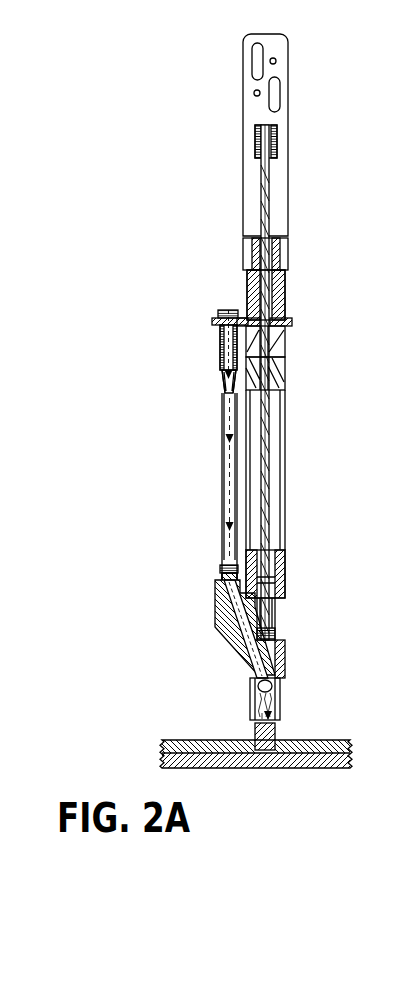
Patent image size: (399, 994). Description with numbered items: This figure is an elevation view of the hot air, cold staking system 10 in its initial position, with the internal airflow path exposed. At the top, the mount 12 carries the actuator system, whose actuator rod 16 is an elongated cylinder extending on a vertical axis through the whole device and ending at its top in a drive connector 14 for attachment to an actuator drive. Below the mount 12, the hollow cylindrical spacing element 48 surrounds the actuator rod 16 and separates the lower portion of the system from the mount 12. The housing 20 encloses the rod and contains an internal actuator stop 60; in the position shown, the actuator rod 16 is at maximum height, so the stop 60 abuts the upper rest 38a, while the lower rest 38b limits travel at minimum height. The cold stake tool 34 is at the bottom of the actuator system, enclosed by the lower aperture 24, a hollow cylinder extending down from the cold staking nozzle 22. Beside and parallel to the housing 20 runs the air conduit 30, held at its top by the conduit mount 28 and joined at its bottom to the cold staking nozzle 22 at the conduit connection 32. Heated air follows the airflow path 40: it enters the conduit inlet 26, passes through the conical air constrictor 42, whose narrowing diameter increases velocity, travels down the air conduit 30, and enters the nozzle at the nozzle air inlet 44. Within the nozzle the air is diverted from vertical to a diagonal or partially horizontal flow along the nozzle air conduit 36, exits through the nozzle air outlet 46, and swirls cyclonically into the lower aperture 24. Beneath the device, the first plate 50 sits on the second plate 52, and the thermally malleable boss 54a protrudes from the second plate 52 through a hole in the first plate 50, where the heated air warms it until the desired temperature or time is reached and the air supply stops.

The hot air, cold staking system 10 is at (183, 80).
The mount 12 is at (289, 63).
The drive connector 14 is at (278, 143).
The actuator rod 16 is at (272, 194).
The housing 20 is at (285, 508).
The cold staking nozzle 22 is at (286, 655).
The lower aperture 24 is at (281, 690).
The conduit inlet 26 is at (232, 291).
The conduit mount 28 is at (216, 320).
The air conduit 30 is at (222, 454).
The conduit connection 32 is at (222, 583).
The cold stake tool 34 is at (276, 625).
The nozzle air conduit 36 is at (216, 635).
The upper rest 38a is at (286, 338).
The lower rest 38b is at (285, 575).
The airflow path 40 is at (222, 420).
The conical air constrictor 42 is at (223, 383).
The nozzle air inlet 44 is at (219, 608).
The nozzle air outlet 46 is at (234, 664).
The spacing element 48 is at (288, 292).
The first plate 50 is at (324, 740).
The second plate 52 is at (290, 770).
The boss 54a is at (278, 731).
The actuator stop 60 is at (279, 378).